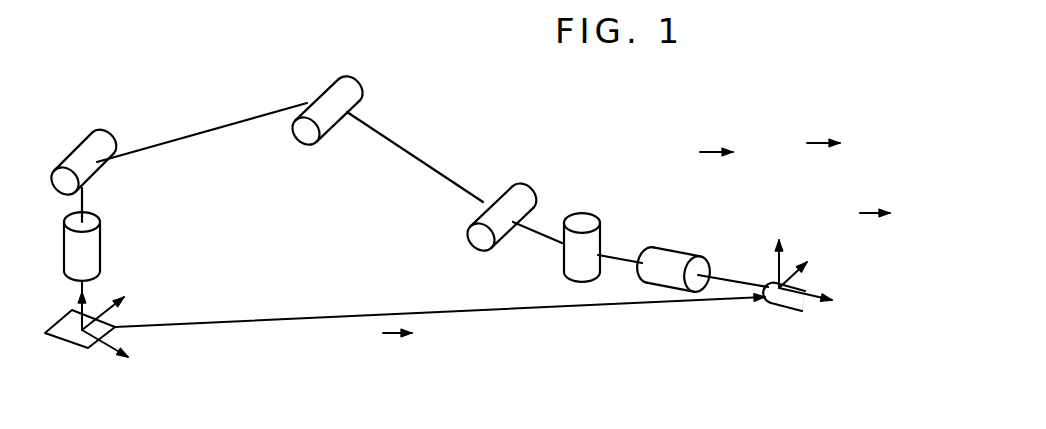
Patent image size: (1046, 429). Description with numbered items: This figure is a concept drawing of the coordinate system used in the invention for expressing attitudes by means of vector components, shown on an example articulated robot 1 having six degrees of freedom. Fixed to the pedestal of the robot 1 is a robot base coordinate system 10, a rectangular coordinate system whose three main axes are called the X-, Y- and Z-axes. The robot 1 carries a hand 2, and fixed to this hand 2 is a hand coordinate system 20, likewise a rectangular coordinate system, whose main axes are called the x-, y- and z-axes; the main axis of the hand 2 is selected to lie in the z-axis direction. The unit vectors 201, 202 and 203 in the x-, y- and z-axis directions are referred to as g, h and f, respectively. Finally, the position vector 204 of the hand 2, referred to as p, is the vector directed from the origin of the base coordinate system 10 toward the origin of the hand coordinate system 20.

The articulated robot 1 is at (210, 138).
The hand 2 is at (768, 305).
The robot base coordinate system 10 is at (105, 345).
The hand coordinate system 20 is at (807, 303).
The unit vector g 201 is at (790, 277).
The unit vector h 202 is at (777, 265).
The unit vector f 203 is at (808, 293).
The position vector 204 is at (428, 317).